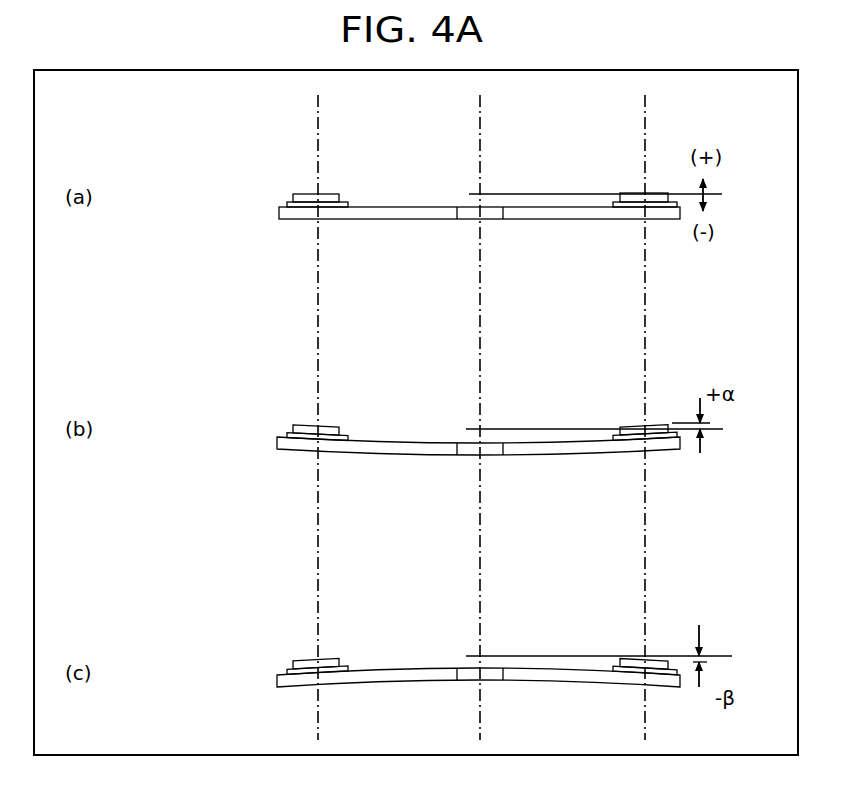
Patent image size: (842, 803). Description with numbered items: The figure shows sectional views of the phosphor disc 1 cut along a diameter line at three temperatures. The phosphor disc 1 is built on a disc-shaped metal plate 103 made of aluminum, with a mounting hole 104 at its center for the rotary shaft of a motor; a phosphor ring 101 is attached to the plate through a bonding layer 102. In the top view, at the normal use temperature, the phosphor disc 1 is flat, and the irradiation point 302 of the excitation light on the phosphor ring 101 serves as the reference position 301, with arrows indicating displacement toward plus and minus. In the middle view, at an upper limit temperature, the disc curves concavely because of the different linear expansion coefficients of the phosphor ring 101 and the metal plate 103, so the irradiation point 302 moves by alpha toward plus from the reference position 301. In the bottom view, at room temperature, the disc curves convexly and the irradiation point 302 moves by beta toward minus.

The phosphor disc 1 is at (192, 145).
The phosphor ring 101 is at (300, 193).
The bonding layer 102 is at (287, 204).
The disc-shaped metal plate 103 is at (281, 215).
The mounting hole 104 is at (467, 215).
The reference position 301 is at (622, 426).
The irradiation point 302 is at (643, 190).